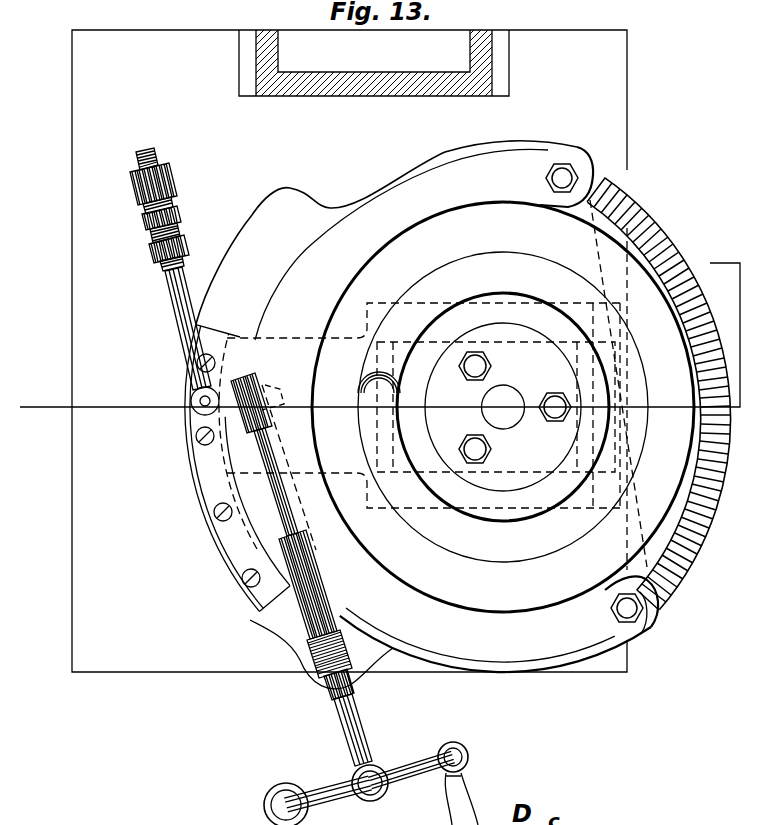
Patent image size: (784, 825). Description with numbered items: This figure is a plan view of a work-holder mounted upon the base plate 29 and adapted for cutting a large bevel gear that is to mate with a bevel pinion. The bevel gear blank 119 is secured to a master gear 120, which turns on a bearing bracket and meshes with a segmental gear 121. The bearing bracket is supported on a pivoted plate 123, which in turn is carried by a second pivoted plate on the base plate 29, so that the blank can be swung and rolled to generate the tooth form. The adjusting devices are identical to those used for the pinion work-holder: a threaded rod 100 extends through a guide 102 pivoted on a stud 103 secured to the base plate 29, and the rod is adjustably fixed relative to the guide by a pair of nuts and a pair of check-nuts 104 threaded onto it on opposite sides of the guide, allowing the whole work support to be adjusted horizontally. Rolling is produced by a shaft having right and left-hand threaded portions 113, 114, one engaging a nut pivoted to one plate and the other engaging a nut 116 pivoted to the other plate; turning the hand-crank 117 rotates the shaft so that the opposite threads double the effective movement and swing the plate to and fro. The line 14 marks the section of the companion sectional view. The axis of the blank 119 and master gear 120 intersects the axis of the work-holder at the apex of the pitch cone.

The base plate 29 is at (80, 598).
The section line 14- 14 is at (380, 325).
The threaded rod 100 is at (152, 150).
The guide 102 is at (174, 218).
The stud 103 is at (178, 197).
The check-nuts 104 is at (170, 170).
The right-hand threaded portion 113 is at (255, 438).
The left-hand threaded portion 114 is at (313, 613).
The nut 116 is at (308, 657).
The hand-crank 117 is at (458, 802).
The bevel gear blank 119 is at (638, 358).
The master gear 120 is at (680, 245).
The segmental gear 121 is at (313, 252).
The plate 123 is at (251, 345).